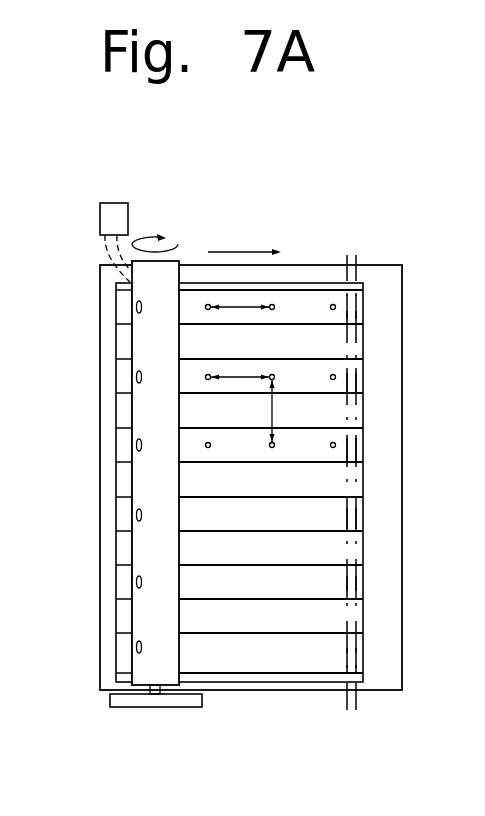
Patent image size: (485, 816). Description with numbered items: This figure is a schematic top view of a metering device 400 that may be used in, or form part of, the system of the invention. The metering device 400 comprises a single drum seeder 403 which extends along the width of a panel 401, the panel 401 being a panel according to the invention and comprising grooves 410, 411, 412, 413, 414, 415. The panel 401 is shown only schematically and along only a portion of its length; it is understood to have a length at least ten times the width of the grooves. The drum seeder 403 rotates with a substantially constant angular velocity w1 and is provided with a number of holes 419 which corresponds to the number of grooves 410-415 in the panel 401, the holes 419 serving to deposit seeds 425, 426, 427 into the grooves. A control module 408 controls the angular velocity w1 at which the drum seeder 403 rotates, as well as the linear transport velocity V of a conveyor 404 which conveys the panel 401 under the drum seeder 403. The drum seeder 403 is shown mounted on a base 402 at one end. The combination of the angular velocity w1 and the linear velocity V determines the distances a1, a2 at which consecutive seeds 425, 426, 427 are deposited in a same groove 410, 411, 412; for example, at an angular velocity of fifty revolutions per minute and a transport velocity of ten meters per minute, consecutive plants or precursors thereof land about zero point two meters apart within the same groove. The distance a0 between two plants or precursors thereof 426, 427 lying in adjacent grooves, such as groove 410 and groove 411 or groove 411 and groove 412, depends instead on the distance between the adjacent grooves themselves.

The metering device 400 is at (316, 197).
The panel 401 is at (350, 627).
The base 402 is at (178, 708).
The drum seeder 403 is at (160, 476).
The conveyor 404 is at (333, 684).
The control module 408 is at (112, 206).
The groove 410 is at (363, 307).
The groove 411 is at (363, 380).
The groove 412 is at (363, 450).
The groove 413 is at (363, 520).
The groove 414 is at (363, 588).
The groove 415 is at (363, 663).
The holes 419 is at (136, 307).
The seed 425 is at (272, 304).
The seed 426 is at (332, 374).
The seed 427 is at (332, 448).
The distance between plants in adjacent grooves a0 is at (288, 411).
The distance between consecutive seeds a1 is at (240, 310).
The distance between consecutive seeds a2 is at (238, 380).
The angular velocity w1 is at (178, 243).
The linear transport velocity V is at (244, 242).